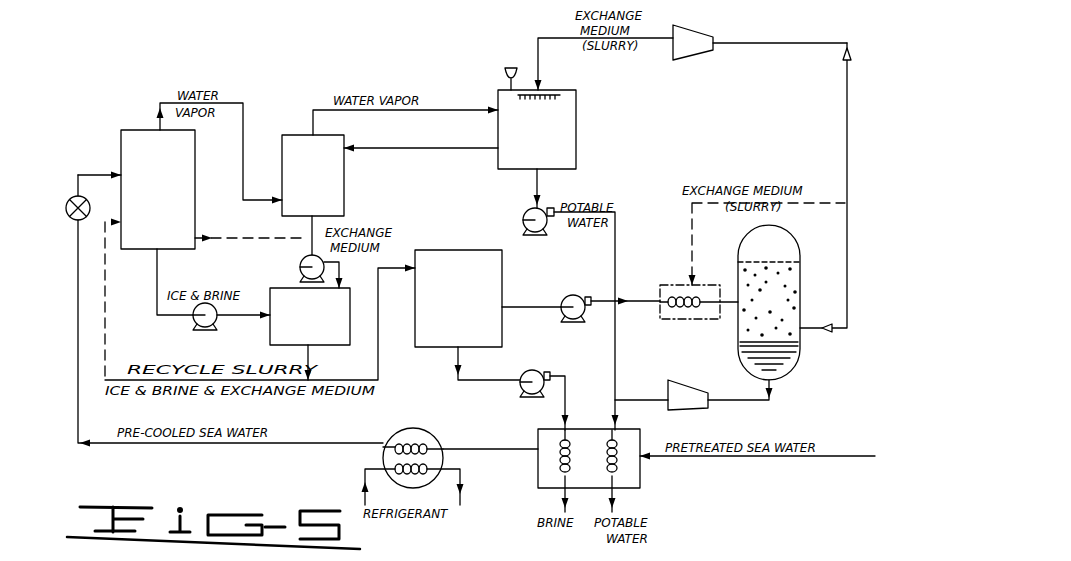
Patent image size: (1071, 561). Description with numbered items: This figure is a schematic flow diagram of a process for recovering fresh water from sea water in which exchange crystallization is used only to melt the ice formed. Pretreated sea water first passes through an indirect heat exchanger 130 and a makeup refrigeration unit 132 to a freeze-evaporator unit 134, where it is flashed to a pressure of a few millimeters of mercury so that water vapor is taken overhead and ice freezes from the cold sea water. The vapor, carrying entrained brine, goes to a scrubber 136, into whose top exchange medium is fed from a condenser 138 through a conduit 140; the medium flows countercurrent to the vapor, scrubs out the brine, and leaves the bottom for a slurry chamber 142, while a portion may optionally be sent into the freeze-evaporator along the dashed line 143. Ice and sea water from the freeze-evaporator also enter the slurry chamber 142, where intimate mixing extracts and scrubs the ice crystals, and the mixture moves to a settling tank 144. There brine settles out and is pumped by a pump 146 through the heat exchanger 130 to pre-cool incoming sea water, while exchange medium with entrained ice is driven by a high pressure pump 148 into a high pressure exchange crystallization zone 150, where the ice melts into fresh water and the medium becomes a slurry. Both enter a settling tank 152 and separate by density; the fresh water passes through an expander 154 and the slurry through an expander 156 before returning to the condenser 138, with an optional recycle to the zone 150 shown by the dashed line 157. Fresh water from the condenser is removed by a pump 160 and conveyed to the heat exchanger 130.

The indirect heat exchanger 130 is at (538, 478).
The makeup refrigeration unit 132 is at (416, 437).
The freeze-evaporator unit 134 is at (165, 194).
The scrubber 136 is at (324, 185).
The condenser 138 is at (548, 137).
The conduit 140 is at (383, 148).
The slurry chamber 142 is at (321, 324).
The dashed line 143 is at (237, 240).
The settling tank 144 is at (469, 305).
The pump 146 is at (527, 370).
The high pressure pump 148 is at (569, 295).
The high pressure exchange crystallization zone 150 is at (668, 320).
The settling tank 152 is at (780, 307).
The expander 154 is at (697, 408).
The expander 156 is at (702, 50).
The dashed line 157 is at (689, 245).
The pump 160 is at (525, 216).